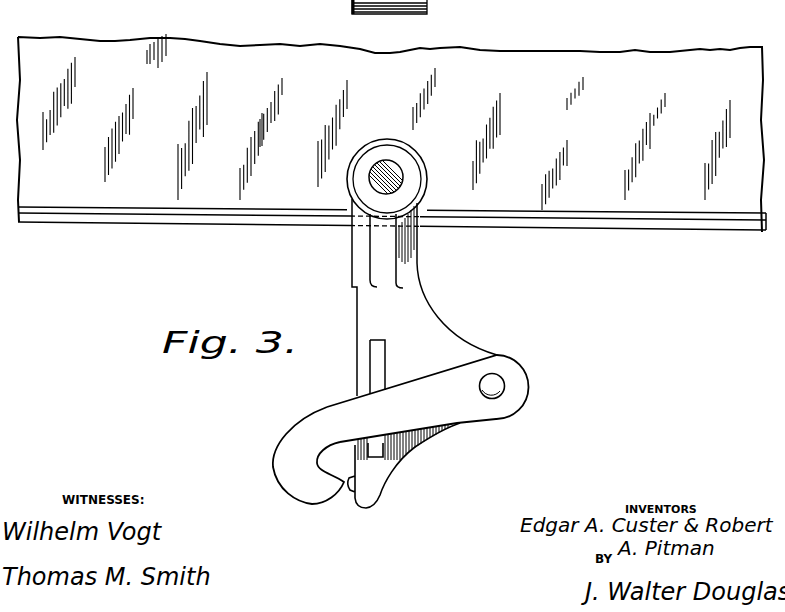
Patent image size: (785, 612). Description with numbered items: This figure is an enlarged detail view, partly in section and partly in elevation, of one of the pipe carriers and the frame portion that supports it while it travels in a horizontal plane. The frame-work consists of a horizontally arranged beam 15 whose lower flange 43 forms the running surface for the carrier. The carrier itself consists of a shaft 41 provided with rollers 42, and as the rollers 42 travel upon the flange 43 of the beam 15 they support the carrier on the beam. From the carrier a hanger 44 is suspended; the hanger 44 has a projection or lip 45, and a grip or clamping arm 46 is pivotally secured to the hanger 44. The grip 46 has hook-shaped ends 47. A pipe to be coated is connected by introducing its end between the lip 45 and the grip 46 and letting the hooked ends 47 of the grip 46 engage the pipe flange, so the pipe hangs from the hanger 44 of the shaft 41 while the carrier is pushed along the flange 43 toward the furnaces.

The horizontally arranged beam 15 is at (222, 58).
The shaft 41 is at (397, 179).
The roller 42 is at (378, 132).
The flange 43 is at (500, 223).
The hanger 44 is at (422, 317).
The lip 45 is at (350, 493).
The grip 46 is at (458, 412).
The hook-shaped end 47 is at (315, 493).